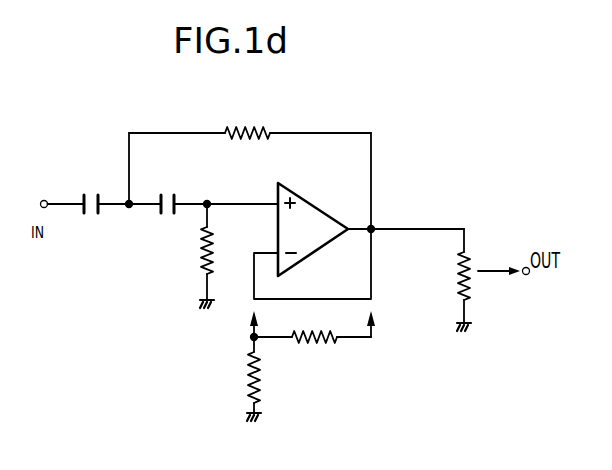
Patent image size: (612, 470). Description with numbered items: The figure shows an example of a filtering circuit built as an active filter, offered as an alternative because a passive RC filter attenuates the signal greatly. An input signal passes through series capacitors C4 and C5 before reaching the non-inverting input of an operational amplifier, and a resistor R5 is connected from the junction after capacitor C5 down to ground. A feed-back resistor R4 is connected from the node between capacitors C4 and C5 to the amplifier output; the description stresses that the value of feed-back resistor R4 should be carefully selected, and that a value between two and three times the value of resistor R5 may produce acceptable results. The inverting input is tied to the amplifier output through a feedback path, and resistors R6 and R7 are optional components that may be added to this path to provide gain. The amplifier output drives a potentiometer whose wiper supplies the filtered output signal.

The input coupling capacitor C4 is at (83, 192).
The coupling capacitor C5 is at (161, 192).
The feed-back resistor R4 is at (250, 163).
The resistor R5 is at (197, 256).
The resistor R6 is at (267, 379).
The resistor R7 is at (312, 353).